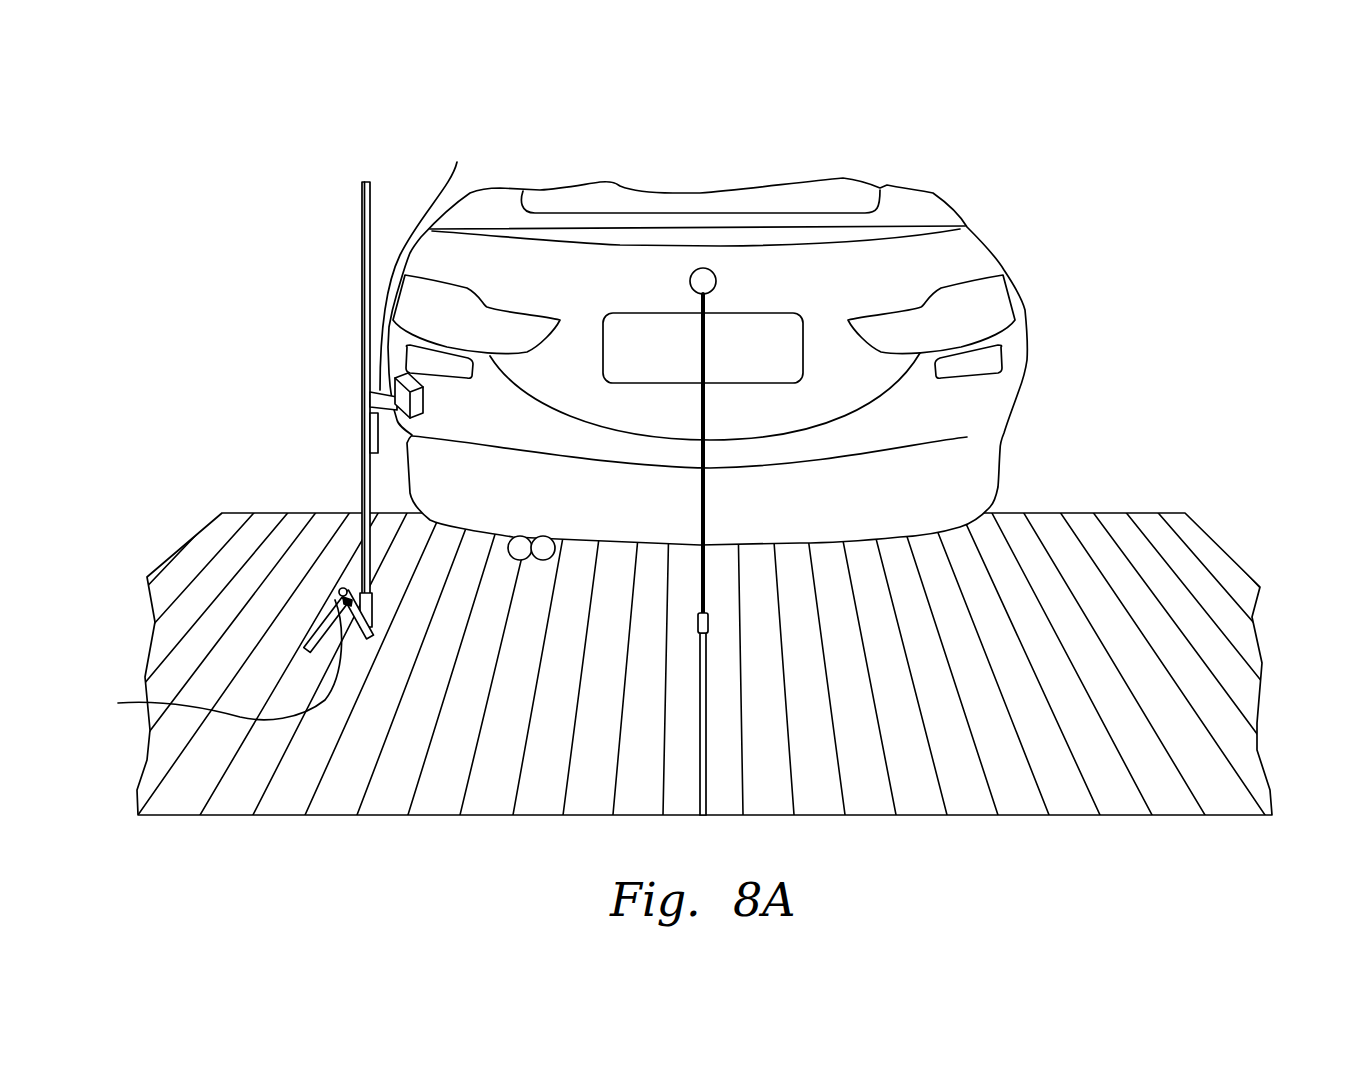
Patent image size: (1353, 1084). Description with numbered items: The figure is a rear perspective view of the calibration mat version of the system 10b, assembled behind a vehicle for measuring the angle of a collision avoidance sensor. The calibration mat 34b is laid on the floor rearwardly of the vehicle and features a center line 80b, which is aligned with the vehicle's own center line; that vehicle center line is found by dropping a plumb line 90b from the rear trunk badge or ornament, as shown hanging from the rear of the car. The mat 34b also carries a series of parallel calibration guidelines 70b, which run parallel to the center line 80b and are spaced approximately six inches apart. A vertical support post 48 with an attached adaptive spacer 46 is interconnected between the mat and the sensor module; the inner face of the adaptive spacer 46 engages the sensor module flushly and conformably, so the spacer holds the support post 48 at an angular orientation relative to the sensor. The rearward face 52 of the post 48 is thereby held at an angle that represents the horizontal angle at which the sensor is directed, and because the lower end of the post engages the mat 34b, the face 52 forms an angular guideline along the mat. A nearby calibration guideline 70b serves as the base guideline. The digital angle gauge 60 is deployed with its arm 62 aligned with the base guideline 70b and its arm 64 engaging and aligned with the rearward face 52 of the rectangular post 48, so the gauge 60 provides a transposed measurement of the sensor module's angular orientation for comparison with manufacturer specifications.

The system 10b is at (275, 397).
The calibration mat 34b is at (1187, 678).
The adaptive spacer 46 is at (426, 259).
The vertical support post 48 is at (362, 267).
The rearward face 52 is at (362, 340).
The digital angle gauge 60 is at (345, 600).
The arm 62 is at (310, 628).
The arm 64 is at (210, 663).
The calibration guideline 70b is at (233, 673).
The center line 80b is at (880, 572).
The plumb line 90b is at (708, 618).